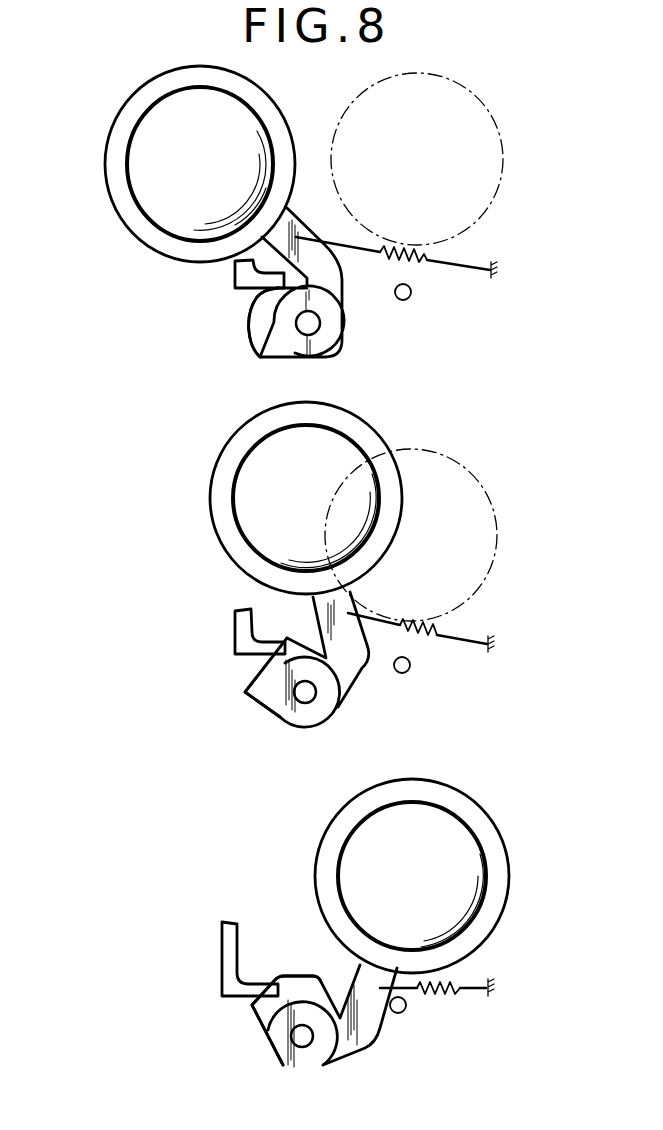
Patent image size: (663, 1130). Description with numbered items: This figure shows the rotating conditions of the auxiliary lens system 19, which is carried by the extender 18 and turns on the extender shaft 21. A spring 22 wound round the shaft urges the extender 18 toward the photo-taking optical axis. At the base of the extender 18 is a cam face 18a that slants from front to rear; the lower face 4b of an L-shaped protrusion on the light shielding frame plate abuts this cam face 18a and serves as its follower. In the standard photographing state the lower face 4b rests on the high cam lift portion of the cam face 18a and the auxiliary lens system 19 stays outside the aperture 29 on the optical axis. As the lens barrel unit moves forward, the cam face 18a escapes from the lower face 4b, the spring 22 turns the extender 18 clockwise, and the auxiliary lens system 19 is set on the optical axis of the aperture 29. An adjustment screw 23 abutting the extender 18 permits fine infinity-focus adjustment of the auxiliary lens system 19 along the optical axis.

The auxiliary lens system 19 is at (136, 148).
The aperture 29 is at (482, 217).
The extender 18 is at (343, 272).
The cam face 18a is at (253, 317).
The extender shaft 21 is at (320, 323).
The lower face 4b is at (242, 297).
The spring 22 is at (468, 268).
The adjustment screw 23 is at (408, 297).